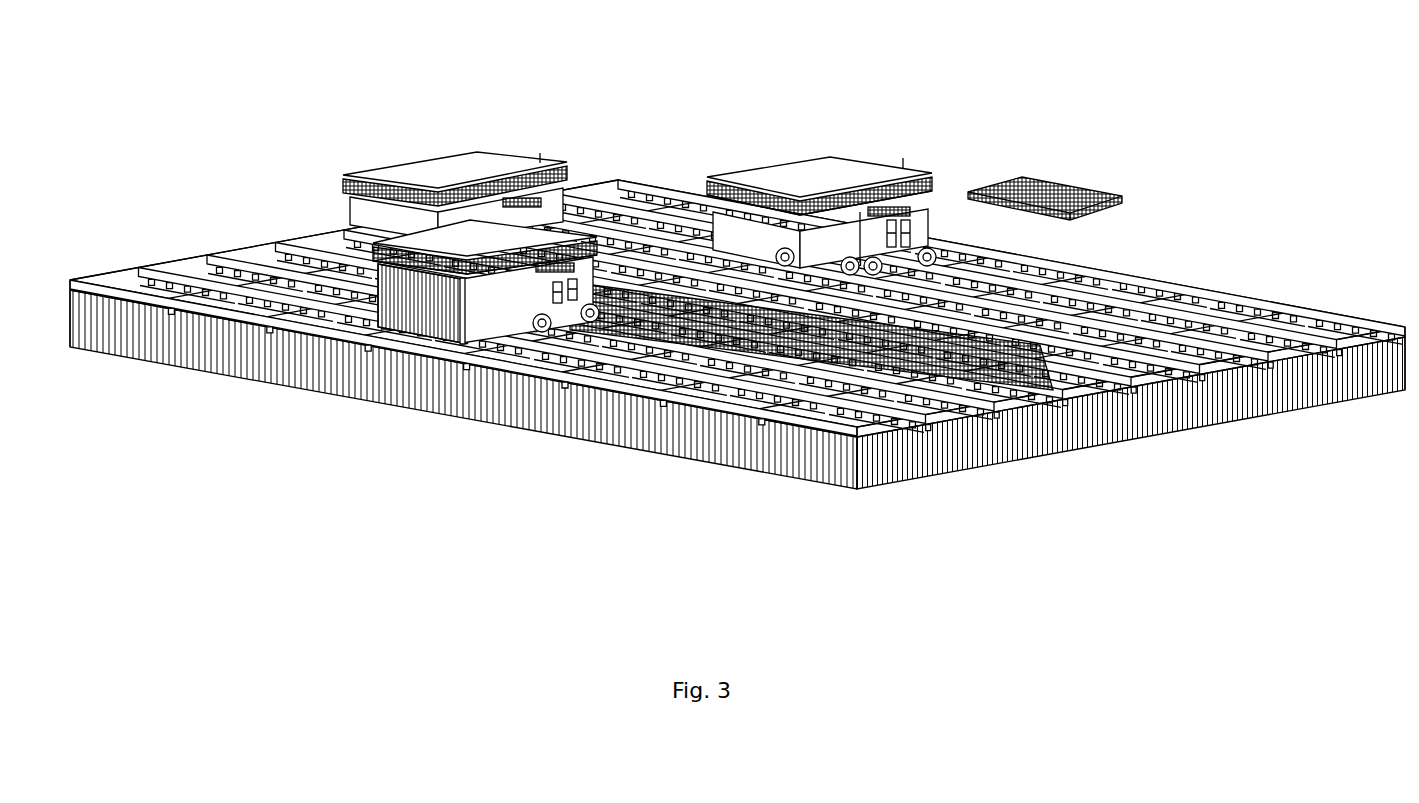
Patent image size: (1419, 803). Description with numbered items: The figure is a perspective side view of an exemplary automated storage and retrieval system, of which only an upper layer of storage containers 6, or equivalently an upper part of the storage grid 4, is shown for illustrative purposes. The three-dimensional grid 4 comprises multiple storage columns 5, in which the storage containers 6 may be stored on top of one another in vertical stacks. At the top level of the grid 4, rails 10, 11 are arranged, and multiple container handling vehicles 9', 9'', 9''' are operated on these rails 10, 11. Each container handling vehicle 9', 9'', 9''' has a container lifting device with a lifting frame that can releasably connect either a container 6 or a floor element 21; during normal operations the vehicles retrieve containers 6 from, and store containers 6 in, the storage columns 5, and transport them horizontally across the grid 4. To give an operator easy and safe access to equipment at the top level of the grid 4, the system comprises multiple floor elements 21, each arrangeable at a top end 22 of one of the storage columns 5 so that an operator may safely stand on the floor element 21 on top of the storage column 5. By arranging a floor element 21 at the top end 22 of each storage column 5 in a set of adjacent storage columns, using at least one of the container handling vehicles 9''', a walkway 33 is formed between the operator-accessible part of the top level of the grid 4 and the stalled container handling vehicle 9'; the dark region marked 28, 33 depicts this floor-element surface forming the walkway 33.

The three-dimensional grid 4 is at (1243, 255).
The storage column 5 is at (1081, 310).
The top end of storage column 22 is at (1081, 310).
The storage container 6 is at (737, 419).
The container handling vehicle 9' is at (455, 145).
The container handling vehicle 9'' is at (375, 253).
The container handling vehicle 9''' is at (821, 156).
The rail 10 is at (221, 397).
The rail 11 is at (153, 241).
The floor element 21 is at (838, 215).
The cover plate 28 is at (811, 218).
The walkway 33 is at (652, 40).